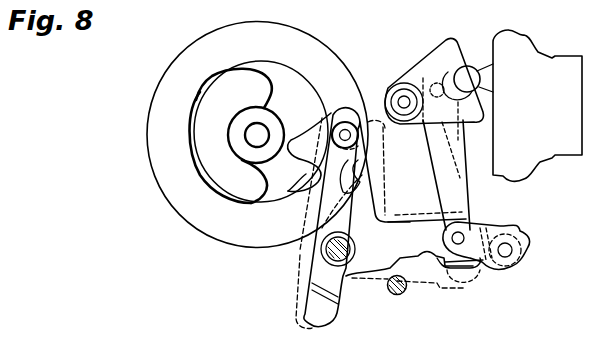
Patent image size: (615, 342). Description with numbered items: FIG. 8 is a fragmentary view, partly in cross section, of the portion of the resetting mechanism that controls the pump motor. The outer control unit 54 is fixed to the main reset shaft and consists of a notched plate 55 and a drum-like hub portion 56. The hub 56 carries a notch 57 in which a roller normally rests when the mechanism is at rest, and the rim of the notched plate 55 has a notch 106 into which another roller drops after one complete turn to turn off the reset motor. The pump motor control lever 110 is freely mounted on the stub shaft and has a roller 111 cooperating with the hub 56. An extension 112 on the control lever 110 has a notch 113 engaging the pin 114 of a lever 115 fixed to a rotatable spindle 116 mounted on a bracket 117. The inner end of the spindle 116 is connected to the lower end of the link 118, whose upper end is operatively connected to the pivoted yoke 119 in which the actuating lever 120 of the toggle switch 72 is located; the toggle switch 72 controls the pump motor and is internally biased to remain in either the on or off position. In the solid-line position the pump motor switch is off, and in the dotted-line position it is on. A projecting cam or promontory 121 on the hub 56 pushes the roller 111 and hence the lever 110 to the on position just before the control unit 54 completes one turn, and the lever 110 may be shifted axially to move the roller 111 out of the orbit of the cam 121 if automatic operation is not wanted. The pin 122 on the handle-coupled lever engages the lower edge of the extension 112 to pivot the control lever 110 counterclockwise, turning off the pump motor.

The control unit 54 is at (203, 231).
The notched plate 55 is at (348, 45).
The drum-like hub portion 56 is at (196, 169).
The notch 57 is at (270, 176).
The toggle switch 72 is at (541, 162).
The notch 106 is at (329, 218).
The pump motor control lever 110 is at (368, 190).
The roller 111 is at (356, 122).
The extension 112 is at (404, 224).
The notch 113 is at (466, 230).
The pin 114 is at (448, 240).
The lever 115 is at (478, 272).
The rotatable spindle 116 is at (518, 265).
The bracket 117 is at (528, 246).
The link 118 is at (465, 187).
The pivoted yoke 119 is at (420, 70).
The actuating lever 120 is at (478, 66).
The cam or promontory 121 is at (340, 150).
The pin 122 is at (391, 292).